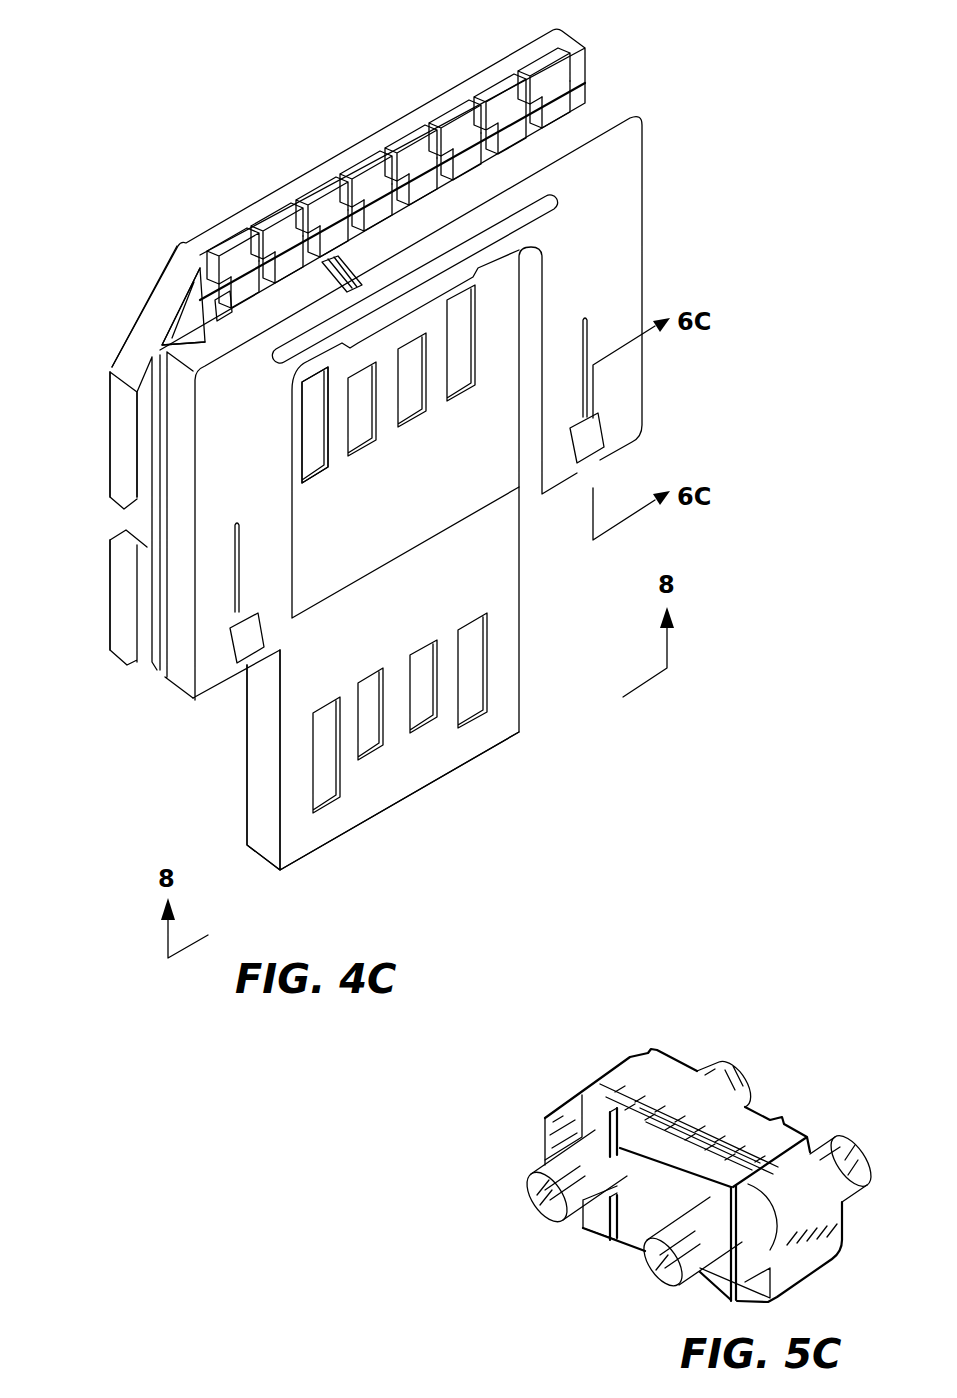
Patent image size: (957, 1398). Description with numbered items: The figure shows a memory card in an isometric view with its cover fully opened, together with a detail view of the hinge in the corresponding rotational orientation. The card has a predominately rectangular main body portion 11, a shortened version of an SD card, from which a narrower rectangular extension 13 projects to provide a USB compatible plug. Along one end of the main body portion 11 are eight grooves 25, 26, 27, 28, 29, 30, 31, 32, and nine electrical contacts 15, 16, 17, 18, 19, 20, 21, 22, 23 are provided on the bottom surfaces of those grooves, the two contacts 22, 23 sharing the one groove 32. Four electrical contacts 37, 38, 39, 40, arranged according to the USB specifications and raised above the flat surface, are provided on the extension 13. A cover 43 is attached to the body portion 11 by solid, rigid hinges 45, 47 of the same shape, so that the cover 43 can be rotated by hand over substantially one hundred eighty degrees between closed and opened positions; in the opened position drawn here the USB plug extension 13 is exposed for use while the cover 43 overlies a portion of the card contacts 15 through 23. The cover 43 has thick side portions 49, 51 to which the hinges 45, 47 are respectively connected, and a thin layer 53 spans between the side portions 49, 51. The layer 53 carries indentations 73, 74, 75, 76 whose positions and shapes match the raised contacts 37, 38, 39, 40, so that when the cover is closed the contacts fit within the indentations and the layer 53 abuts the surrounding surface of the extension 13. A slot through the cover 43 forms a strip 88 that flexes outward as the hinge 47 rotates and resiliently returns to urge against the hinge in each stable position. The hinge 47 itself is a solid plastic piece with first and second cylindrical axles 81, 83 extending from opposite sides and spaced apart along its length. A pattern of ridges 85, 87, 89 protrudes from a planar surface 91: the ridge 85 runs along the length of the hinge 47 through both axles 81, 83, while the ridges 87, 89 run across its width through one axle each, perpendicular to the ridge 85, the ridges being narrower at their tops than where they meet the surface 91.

In FIG. 4C, the main body portion 11 is at (90, 600).
In FIG. 4C, the extension 13 is at (545, 640).
In FIG. 4C, the electrical contact 15 is at (178, 310).
In FIG. 4C, the electrical contact 16 is at (233, 242).
In FIG. 4C, the electrical contact 17 is at (277, 217).
In FIG. 4C, the electrical contact 18 is at (322, 191).
In FIG. 4C, the electrical contact 19 is at (366, 165).
In FIG. 4C, the electrical contact 20 is at (411, 139).
In FIG. 4C, the electrical contact 21 is at (455, 114).
In FIG. 4C, the electrical contact 22 is at (500, 88).
In FIG. 4C, the electrical contact 23 is at (556, 104).
In FIG. 4C, the groove 25 is at (165, 340).
In FIG. 4C, the groove 26 is at (245, 284).
In FIG. 4C, the groove 27 is at (289, 259).
In FIG. 4C, the groove 28 is at (334, 233).
In FIG. 4C, the groove 29 is at (378, 207).
In FIG. 4C, the groove 30 is at (423, 181).
In FIG. 4C, the groove 31 is at (467, 156).
In FIG. 4C, the groove 32 is at (544, 62).
In FIG. 4C, the electrical contact 37 is at (330, 797).
In FIG. 4C, the electrical contact 38 is at (372, 745).
In FIG. 4C, the electrical contact 39 is at (427, 717).
In FIG. 4C, the electrical contact 40 is at (485, 665).
In FIG. 4C, the cover 43 is at (660, 152).
In FIG. 4C, the hinge 45 is at (250, 642).
In FIG. 4C, the hinge 47 is at (580, 446).
In FIG. 5C, the hinge 47 is at (590, 1035).
In FIG. 4C, the side portion 49 is at (215, 450).
In FIG. 4C, the side portion 51 is at (585, 300).
In FIG. 4C, the layer 53 is at (374, 441).
In FIG. 4C, the indentation 73 is at (312, 470).
In FIG. 4C, the indentation 74 is at (362, 440).
In FIG. 4C, the indentation 75 is at (410, 410).
In FIG. 4C, the indentation 76 is at (460, 380).
In FIG. 4C, the strip 88 is at (622, 407).
In FIG. 5C, the first cylindrical axle 81 is at (727, 1073).
In FIG. 5C, the second cylindrical axle 83 is at (847, 1148).
In FIG. 5C, the ridge 85 is at (672, 1208).
In FIG. 5C, the ridge 87 is at (577, 1112).
In FIG. 5C, the ridge 89 is at (723, 1283).
In FIG. 5C, the planar surface 91 is at (688, 1162).